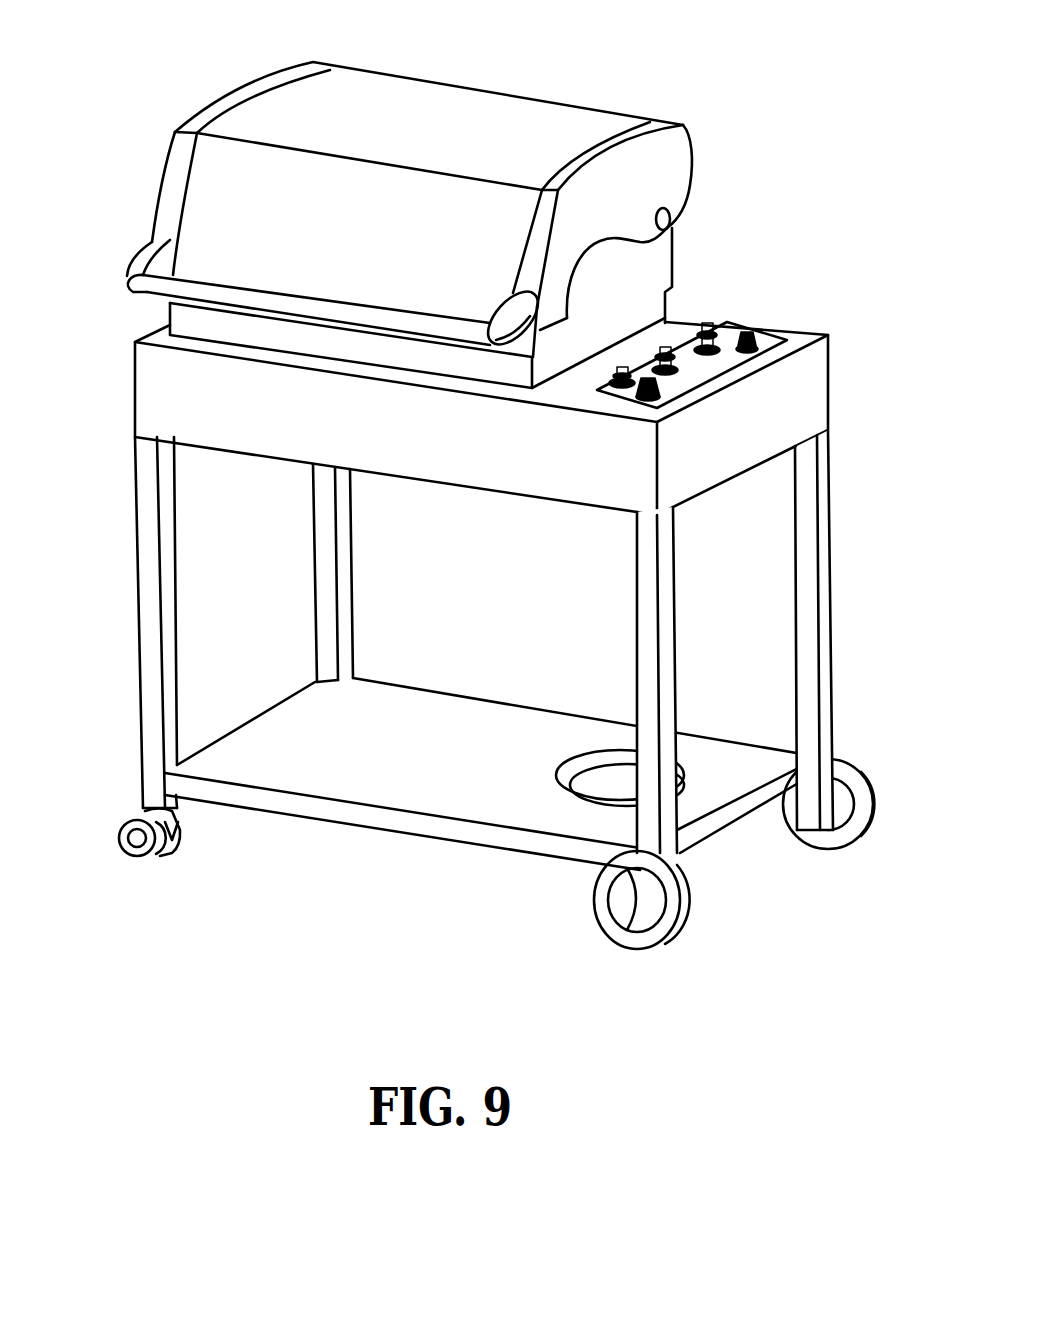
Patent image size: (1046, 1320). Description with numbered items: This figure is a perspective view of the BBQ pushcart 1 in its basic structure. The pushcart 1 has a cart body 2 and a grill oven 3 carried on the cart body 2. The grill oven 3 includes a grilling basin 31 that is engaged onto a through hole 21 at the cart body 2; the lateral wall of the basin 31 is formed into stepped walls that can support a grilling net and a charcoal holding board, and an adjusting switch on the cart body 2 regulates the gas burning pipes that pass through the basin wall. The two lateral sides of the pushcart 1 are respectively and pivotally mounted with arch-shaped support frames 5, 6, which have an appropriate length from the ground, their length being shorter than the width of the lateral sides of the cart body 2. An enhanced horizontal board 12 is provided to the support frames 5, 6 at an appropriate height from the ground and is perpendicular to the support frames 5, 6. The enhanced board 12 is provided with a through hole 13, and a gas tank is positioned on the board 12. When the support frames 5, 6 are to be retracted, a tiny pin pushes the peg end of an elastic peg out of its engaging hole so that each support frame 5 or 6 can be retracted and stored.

The BBQ pushcart 1 is at (275, 473).
The cart body 2 is at (752, 345).
The grill oven 3 is at (700, 254).
The support frame 5 is at (148, 590).
The support frame 6 is at (827, 601).
The enhanced horizontal board 12 is at (393, 788).
The through hole 13 is at (600, 788).
The through hole 21 is at (650, 293).
The grilling basin 31 is at (630, 277).